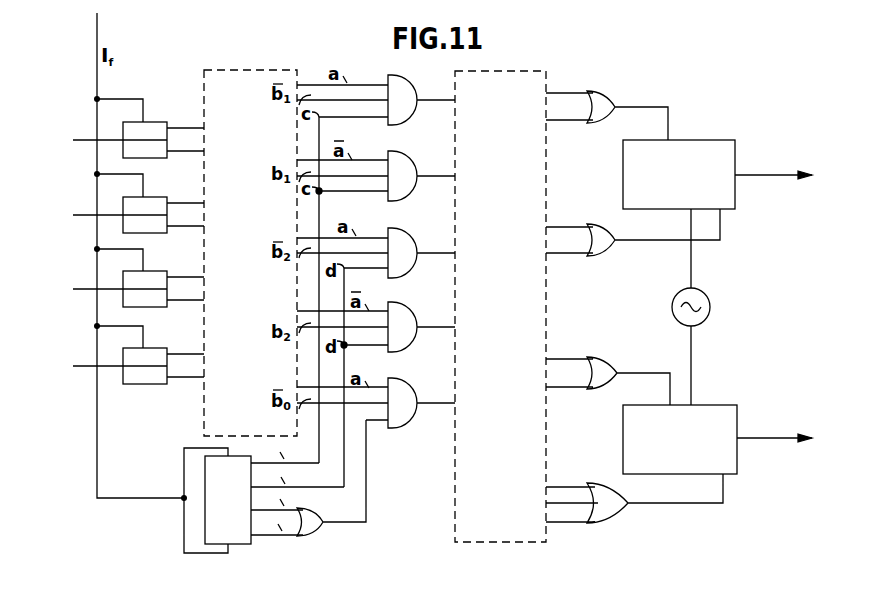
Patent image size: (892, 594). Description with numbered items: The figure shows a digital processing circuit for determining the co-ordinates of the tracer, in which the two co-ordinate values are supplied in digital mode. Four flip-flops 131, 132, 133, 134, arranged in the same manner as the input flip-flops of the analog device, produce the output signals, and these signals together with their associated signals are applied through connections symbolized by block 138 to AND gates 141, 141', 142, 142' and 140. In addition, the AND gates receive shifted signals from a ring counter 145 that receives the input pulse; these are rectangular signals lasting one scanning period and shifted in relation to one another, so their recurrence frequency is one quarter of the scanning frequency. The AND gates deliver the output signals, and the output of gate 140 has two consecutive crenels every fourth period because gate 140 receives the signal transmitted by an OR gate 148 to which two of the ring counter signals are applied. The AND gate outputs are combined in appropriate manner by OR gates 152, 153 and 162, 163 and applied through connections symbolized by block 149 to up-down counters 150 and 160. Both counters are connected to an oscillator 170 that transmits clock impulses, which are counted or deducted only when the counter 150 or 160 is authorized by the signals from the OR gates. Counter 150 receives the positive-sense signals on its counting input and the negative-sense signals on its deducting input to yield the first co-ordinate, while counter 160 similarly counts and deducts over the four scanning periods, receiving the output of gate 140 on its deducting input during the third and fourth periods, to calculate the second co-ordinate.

The flip-flop 131 is at (155, 126).
The flip-flop 132 is at (155, 201).
The flip-flop 133 is at (155, 276).
The flip-flop 134 is at (155, 353).
The block symbolizing connections 138 is at (238, 73).
The AND gate 140 is at (408, 413).
The AND gate 141 is at (376, 106).
The AND gate 141' is at (376, 182).
The AND gate 142 is at (376, 259).
The AND gate 142' is at (376, 333).
The ring counter 145 is at (236, 538).
The OR gate 148 is at (305, 533).
The block symbolizing connections 149 is at (500, 543).
The up-down counter 150 is at (697, 152).
The OR gate 152 is at (600, 93).
The OR gate 153 is at (598, 256).
The up-down counter 160 is at (708, 412).
The OR gate 162 is at (603, 359).
The OR gate 163 is at (618, 518).
The oscillator 170 is at (706, 295).